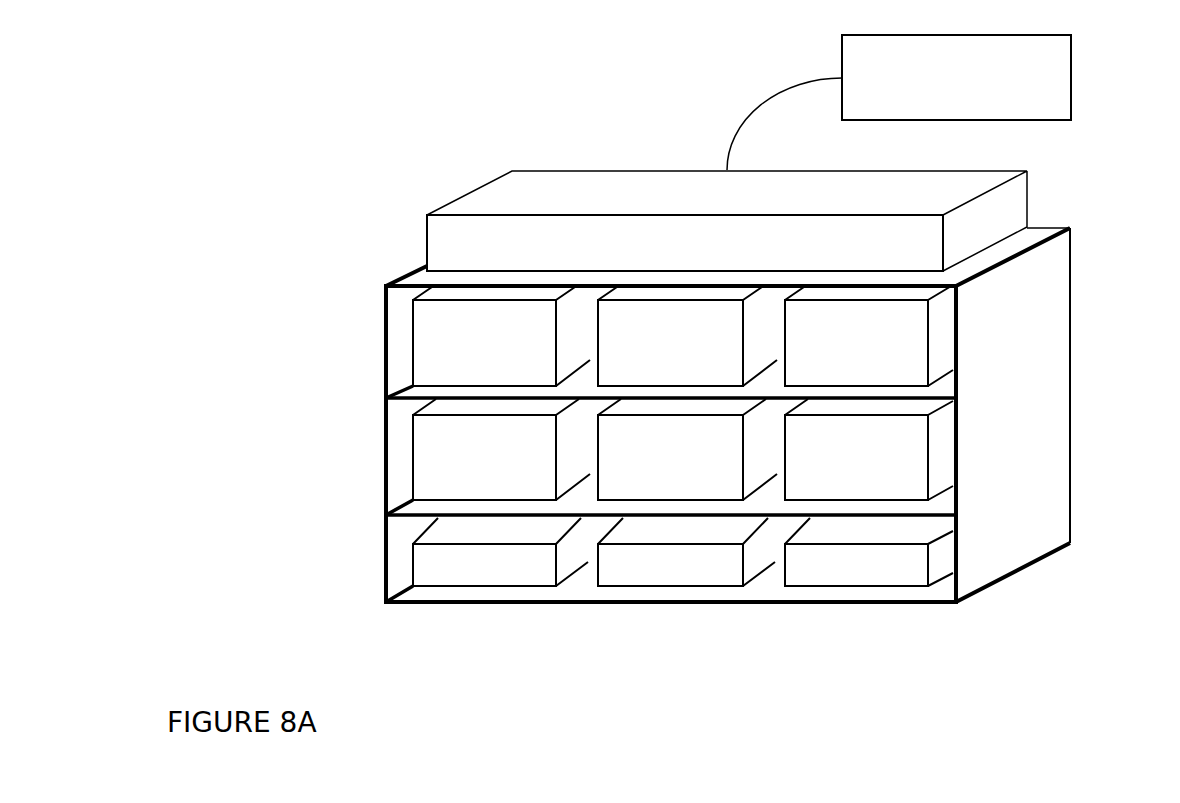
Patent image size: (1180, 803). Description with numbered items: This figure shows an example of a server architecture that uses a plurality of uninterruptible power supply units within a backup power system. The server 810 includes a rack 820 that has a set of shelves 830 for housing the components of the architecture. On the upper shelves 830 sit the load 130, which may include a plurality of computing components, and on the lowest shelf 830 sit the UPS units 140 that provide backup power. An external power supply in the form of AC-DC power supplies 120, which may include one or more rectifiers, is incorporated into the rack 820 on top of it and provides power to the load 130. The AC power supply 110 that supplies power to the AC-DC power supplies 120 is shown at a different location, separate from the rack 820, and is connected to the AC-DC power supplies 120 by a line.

The AC power supply 110 is at (1071, 95).
The AC-DC power supplies 120 is at (425, 245).
The load 130 is at (412, 328).
The UPS units 140 is at (412, 572).
The server 810 is at (682, 473).
The rack 820 is at (387, 390).
The shelves 830 is at (958, 401).